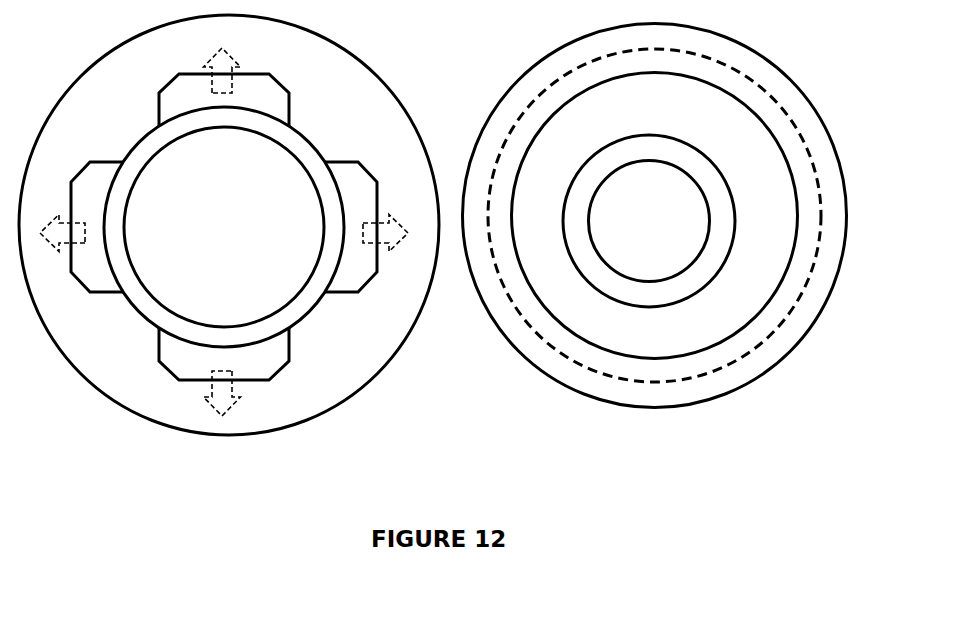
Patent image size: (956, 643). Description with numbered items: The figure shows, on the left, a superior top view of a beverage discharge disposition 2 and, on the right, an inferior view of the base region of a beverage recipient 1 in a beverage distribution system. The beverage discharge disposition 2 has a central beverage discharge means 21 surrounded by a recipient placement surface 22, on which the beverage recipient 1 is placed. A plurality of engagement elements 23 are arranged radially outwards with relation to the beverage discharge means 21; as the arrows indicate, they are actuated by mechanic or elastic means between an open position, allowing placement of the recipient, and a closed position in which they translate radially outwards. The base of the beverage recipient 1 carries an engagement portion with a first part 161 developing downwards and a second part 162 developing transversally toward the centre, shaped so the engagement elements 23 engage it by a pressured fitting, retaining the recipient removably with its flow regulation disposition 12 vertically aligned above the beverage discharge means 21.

The beverage recipient 1 is at (654, 235).
The beverage discharge disposition 2 is at (229, 242).
The flow regulation disposition 12 is at (649, 221).
The beverage discharge means 21 is at (224, 227).
The recipient placement surface 22 is at (265, 411).
The engagement elements 23 is at (224, 227).
The first part of engagement portion 161 is at (654, 216).
The second part of engagement portion 162 is at (711, 359).